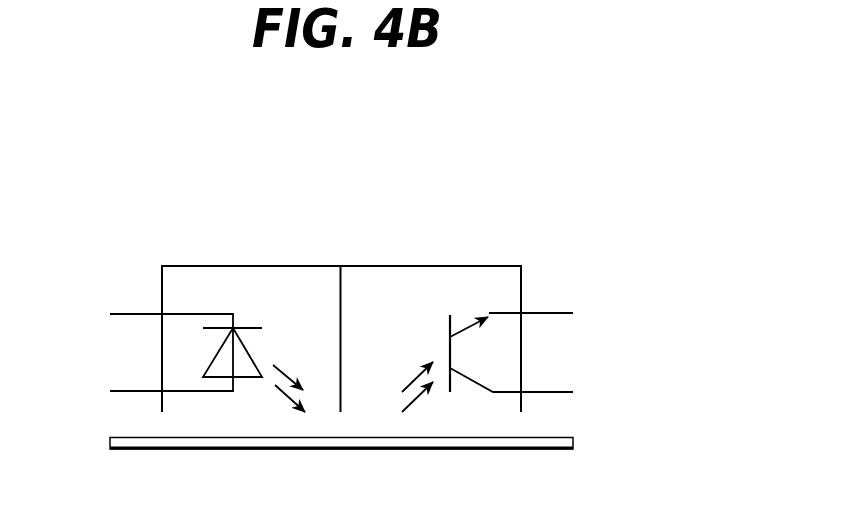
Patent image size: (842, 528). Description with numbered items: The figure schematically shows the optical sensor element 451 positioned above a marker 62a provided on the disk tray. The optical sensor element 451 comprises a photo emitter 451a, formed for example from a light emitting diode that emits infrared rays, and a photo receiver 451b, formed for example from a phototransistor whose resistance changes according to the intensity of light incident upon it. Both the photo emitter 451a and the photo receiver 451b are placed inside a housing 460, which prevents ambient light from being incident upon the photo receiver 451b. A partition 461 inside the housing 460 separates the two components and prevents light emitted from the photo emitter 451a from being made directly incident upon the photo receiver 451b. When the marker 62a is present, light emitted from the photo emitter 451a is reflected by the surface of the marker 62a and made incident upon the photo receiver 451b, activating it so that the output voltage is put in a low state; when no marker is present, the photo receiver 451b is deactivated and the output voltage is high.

The optical sensor element 451 is at (388, 170).
The photo emitter 451a is at (203, 345).
The photo receiver 451b is at (480, 350).
The housing 460 is at (415, 266).
The partition 461 is at (340, 313).
The marker 62a is at (408, 450).